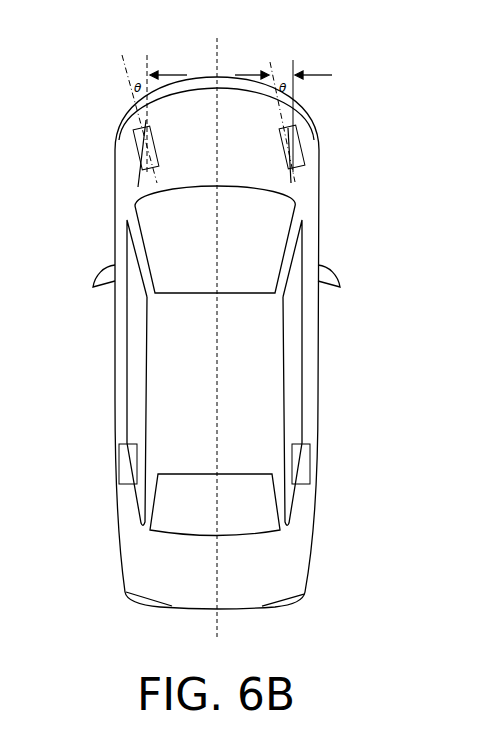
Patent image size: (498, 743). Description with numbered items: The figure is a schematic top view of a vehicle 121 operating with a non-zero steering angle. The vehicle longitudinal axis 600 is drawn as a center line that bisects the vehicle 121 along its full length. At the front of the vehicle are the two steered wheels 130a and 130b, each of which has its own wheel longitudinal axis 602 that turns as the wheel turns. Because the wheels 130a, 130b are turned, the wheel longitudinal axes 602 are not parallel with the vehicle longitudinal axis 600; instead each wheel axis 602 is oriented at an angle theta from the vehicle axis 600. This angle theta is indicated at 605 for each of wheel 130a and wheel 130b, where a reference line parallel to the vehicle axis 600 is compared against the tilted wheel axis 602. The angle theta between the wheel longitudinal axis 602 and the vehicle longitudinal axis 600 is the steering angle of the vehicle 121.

The vehicle 121 is at (308, 607).
The vehicle longitudinal axis 600 is at (217, 105).
The angle θ indication 605 is at (140, 77).
The wheel longitudinal axis 602 is at (133, 99).
The wheel 130a is at (137, 145).
The wheel 130b is at (304, 148).